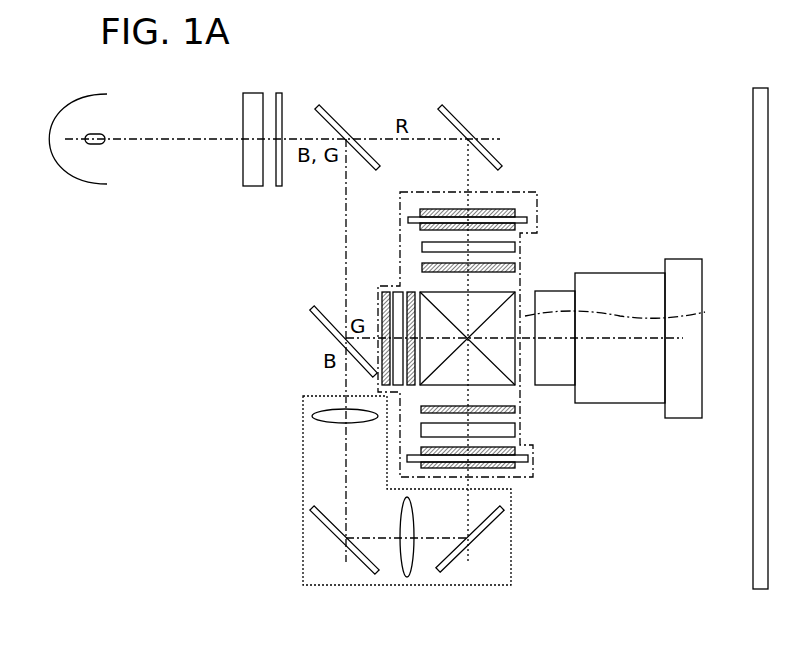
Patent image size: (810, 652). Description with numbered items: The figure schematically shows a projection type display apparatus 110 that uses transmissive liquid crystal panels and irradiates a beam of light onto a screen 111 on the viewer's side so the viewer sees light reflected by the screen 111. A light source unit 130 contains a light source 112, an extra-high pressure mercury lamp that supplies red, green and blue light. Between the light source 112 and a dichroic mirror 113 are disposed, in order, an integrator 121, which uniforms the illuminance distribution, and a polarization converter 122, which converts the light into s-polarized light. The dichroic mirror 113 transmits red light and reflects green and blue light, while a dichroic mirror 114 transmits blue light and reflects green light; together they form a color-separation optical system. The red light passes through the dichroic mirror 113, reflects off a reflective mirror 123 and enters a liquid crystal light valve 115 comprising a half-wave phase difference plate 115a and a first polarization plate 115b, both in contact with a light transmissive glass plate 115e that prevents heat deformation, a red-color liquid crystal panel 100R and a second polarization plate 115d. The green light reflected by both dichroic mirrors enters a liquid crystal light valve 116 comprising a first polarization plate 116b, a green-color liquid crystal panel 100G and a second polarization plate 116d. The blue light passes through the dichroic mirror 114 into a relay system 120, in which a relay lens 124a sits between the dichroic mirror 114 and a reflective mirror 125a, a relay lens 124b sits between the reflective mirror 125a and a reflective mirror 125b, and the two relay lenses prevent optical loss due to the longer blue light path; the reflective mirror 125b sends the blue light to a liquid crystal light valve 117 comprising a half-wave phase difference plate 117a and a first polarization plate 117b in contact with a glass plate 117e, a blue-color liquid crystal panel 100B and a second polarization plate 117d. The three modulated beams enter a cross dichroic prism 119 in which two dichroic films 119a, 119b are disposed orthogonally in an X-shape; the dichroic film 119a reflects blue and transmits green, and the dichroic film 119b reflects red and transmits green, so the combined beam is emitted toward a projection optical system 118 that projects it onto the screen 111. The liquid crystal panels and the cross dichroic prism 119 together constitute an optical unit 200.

The projection type display apparatus 110 is at (556, 93).
The screen 111 is at (760, 87).
The light source 112 is at (66, 100).
The dichroic mirror 113 is at (338, 116).
The dichroic mirror 114 is at (326, 331).
The liquid crystal light valve 115 is at (554, 207).
The λ/2 phase difference plate 115a is at (514, 212).
The first polarization plate 115b is at (514, 227).
The second polarization plate 115d is at (514, 267).
The light transmissive glass plate 115e is at (528, 220).
The liquid crystal light valve 116 is at (296, 302).
The first polarization plate 116b is at (386, 291).
The second polarization plate 116d is at (410, 291).
The liquid crystal light valve 117 is at (554, 469).
The λ/2 phase difference plate 117a is at (514, 467).
The first polarization plate 117b is at (514, 451).
The second polarization plate 117d is at (514, 410).
The glass plate 117e is at (529, 459).
The projection optical system 118 is at (680, 410).
The cross dichroic prism 119 is at (461, 309).
The dichroic film 119a is at (506, 302).
The dichroic film 119b is at (418, 292).
The relay system 120 is at (407, 517).
The integrator 121 is at (249, 92).
The polarization converter 122 is at (280, 92).
The reflective mirror 123 is at (458, 118).
The relay lens 124a is at (306, 419).
The relay lens 124b is at (408, 572).
The reflective mirror 125a is at (353, 556).
The reflective mirror 125b is at (480, 530).
The light source unit 130 is at (83, 206).
The optical unit 200 is at (635, 315).
The red-color liquid crystal panel 100R is at (514, 247).
The green-color liquid crystal panel 100G is at (398, 291).
The blue-color liquid crystal panel 100B is at (514, 430).